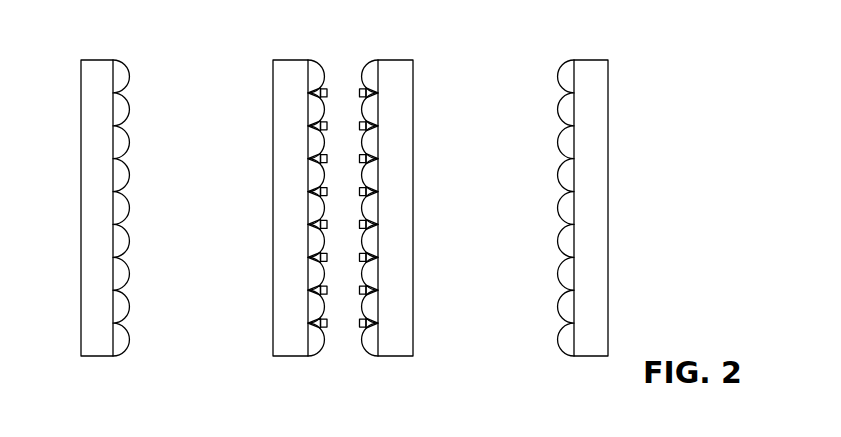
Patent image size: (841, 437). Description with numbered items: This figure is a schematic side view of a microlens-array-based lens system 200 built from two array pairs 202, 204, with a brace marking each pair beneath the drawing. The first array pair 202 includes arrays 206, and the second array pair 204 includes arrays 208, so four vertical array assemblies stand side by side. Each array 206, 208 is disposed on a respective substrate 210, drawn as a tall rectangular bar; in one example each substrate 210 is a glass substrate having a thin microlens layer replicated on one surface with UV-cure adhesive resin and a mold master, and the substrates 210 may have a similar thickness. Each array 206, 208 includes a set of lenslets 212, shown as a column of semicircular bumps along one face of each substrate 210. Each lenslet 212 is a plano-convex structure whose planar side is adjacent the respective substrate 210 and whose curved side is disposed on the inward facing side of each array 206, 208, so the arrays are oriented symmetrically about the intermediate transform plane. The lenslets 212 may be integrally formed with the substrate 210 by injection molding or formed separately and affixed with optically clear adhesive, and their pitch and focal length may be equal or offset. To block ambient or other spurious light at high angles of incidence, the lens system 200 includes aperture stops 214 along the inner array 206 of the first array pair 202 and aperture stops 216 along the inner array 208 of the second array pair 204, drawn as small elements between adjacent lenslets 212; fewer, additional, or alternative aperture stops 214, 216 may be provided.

The MLA-based lens system 200 is at (670, 72).
The first array pair 202 is at (328, 367).
The second array pair 204 is at (608, 367).
The arrays 206 is at (131, 48).
The arrays 208 is at (378, 48).
The substrate 210 is at (81, 165).
The lenslets 212 is at (132, 308).
The aperture stops 214 is at (329, 96).
The aperture stops 216 is at (358, 93).